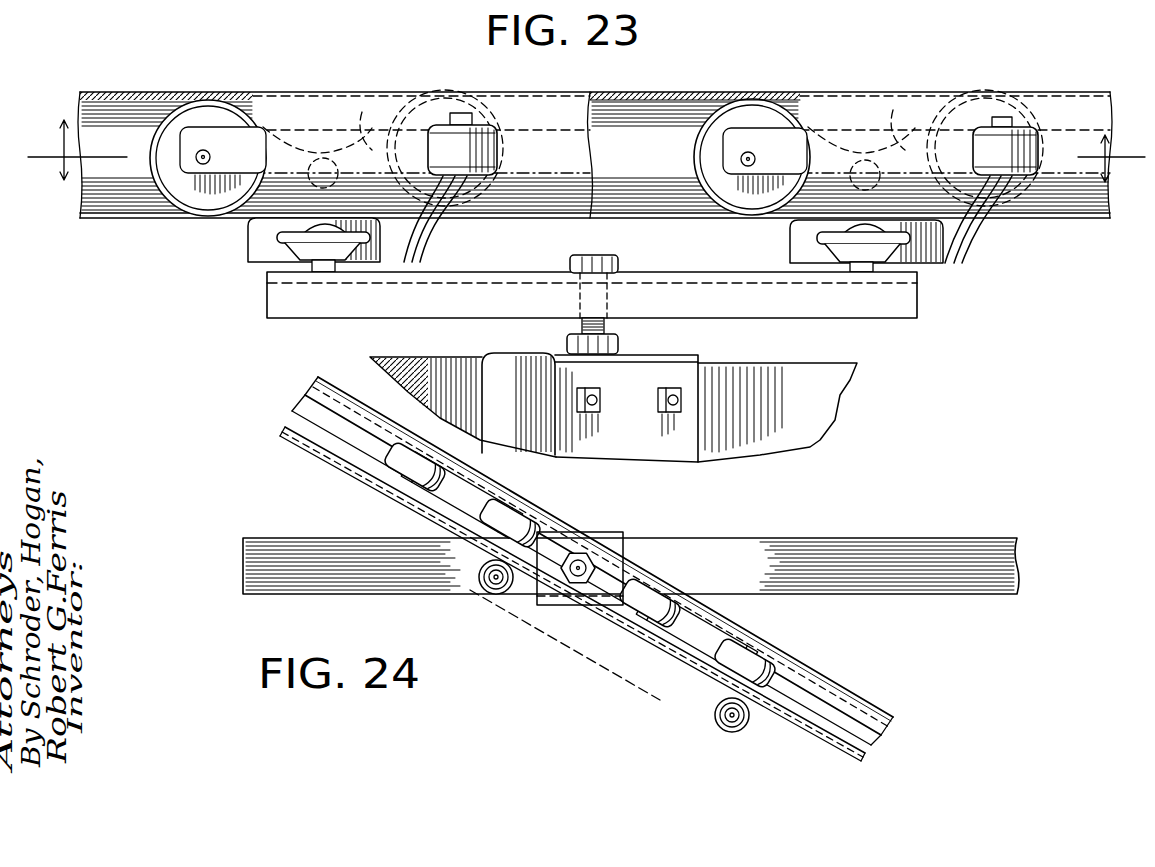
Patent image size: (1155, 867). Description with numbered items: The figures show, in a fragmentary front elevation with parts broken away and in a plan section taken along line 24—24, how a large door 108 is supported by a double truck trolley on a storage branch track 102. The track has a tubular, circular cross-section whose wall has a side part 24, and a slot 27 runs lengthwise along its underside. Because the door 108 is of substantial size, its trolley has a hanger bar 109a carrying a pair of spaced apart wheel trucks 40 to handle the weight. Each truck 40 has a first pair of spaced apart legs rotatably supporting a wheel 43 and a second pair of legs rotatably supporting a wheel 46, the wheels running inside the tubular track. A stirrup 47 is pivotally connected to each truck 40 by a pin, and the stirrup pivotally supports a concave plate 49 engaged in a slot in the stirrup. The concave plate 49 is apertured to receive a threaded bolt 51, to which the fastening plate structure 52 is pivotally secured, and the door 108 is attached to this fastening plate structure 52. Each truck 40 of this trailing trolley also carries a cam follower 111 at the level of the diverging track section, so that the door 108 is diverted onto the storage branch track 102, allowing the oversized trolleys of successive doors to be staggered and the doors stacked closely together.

In FIG. 23, the side part 24 is at (586, 151).
In FIG. 23, the slot 27 is at (127, 218).
In FIG. 24, the slot 27 is at (300, 399).
In FIG. 23, the truck 40 is at (362, 112).
In FIG. 24, the truck 40 is at (440, 498).
In FIG. 23, the wheel 43 is at (990, 112).
In FIG. 24, the wheel 43 is at (542, 522).
In FIG. 23, the wheel 46 is at (198, 195).
In FIG. 24, the wheel 46 is at (392, 476).
In FIG. 23, the stirrup 47 is at (250, 245).
In FIG. 23, the concave plate 49 is at (290, 247).
In FIG. 23, the threaded bolt 51 is at (620, 325).
In FIG. 24, the threaded bolt 51 is at (588, 552).
In FIG. 23, the fastening plate structure 52 is at (673, 452).
In FIG. 24, the fastening plate structure 52 is at (575, 607).
In FIG. 23, the storage branch track 102 is at (640, 92).
In FIG. 24, the storage branch track 102 is at (304, 438).
In FIG. 23, the door 108 is at (848, 410).
In FIG. 24, the door 108 is at (934, 556).
In FIG. 23, the hanger bar 109a is at (919, 305).
In FIG. 24, the hanger bar 109a is at (675, 640).
In FIG. 23, the cam follower 111 is at (498, 143).
In FIG. 24, the cam follower 111 is at (495, 596).